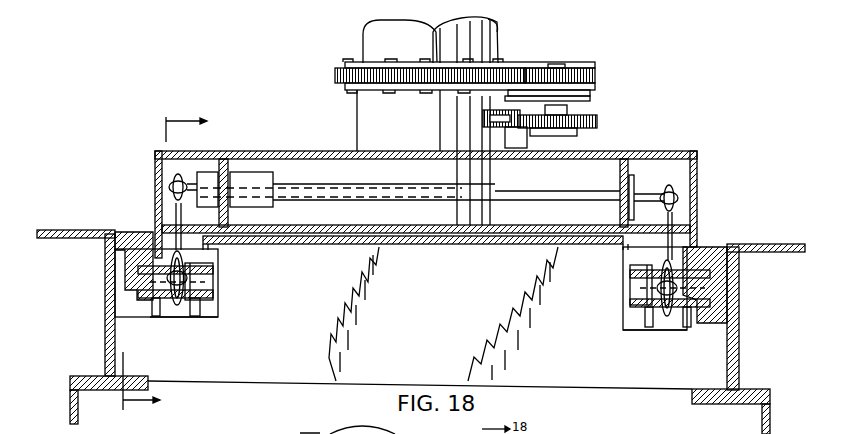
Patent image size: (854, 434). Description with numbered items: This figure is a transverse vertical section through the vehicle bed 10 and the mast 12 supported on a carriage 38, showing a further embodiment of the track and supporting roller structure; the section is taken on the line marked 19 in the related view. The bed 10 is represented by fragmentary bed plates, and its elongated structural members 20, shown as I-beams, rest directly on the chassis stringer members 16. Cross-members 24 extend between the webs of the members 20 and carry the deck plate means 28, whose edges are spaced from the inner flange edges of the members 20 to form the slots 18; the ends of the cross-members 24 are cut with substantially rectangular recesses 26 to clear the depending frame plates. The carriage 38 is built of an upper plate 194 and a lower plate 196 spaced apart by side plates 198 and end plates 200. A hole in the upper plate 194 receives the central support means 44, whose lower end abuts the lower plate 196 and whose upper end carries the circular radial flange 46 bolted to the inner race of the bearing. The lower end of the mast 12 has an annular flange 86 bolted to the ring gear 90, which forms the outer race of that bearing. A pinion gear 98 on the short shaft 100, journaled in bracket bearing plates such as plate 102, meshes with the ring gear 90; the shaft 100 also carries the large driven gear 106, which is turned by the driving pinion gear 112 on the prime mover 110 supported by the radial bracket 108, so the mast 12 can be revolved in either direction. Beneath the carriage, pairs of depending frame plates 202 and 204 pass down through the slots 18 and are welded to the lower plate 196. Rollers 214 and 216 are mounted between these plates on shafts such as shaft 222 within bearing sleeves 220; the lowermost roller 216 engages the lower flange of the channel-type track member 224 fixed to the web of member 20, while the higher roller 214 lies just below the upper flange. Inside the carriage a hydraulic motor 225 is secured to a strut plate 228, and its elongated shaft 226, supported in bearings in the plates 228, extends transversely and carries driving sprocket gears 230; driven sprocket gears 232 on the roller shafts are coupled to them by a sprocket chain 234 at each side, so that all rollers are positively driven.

The vehicle bed 10 is at (48, 230).
The mast 12 is at (493, 52).
The chassis stringer member 16 is at (70, 400).
The slot 18 is at (207, 250).
The section line 19 is at (154, 260).
The elongated structural member 20 is at (420, 312).
The cross-member 24 is at (255, 365).
The recess 26 is at (200, 317).
The deck plate means 28 is at (305, 244).
The carriage 38 is at (434, 191).
The central support means 44 is at (357, 113).
The circular radial flange 46 is at (407, 91).
The annular flange 86 is at (413, 63).
The ring gear 90 is at (336, 76).
The pinion gear 98 is at (596, 77).
The short shaft 100 is at (576, 103).
The bracket bearing plate 102 is at (596, 92).
The driven gear 106 is at (580, 129).
The radial bracket 108 is at (466, 123).
The prime mover 110 is at (527, 145).
The driving pinion gear 112 is at (487, 125).
The upper plate 194 is at (434, 197).
The lower plate 196 is at (500, 245).
The side plate 198 is at (155, 160).
The end plate 200 is at (290, 170).
The depending frame plate 202 is at (413, 312).
The depending frame plate 204 is at (156, 302).
The roller 214 is at (127, 218).
The roller 216 is at (105, 294).
The bearing sleeve 220 is at (213, 272).
The shaft 222 is at (214, 288).
The channel-type track member 224 is at (105, 313).
The hydraulic motor 225 is at (270, 195).
The shaft 226 is at (520, 189).
The strut plate 228 is at (229, 162).
The driving sprocket gear 230 is at (181, 173).
The driven sprocket gear 232 is at (177, 306).
The sprocket chain 234 is at (178, 208).